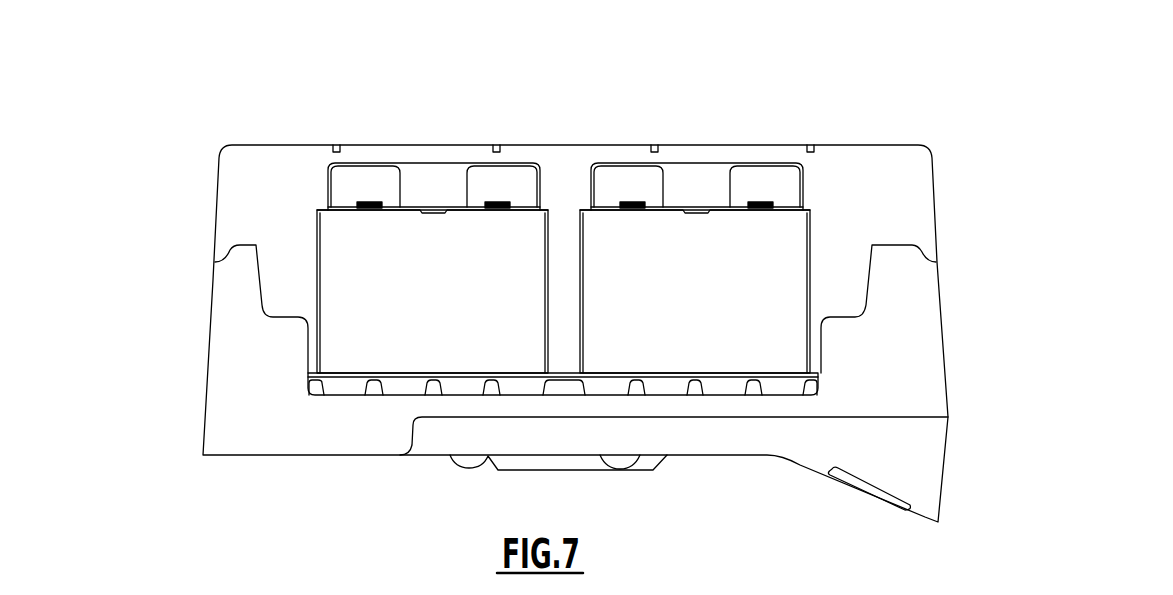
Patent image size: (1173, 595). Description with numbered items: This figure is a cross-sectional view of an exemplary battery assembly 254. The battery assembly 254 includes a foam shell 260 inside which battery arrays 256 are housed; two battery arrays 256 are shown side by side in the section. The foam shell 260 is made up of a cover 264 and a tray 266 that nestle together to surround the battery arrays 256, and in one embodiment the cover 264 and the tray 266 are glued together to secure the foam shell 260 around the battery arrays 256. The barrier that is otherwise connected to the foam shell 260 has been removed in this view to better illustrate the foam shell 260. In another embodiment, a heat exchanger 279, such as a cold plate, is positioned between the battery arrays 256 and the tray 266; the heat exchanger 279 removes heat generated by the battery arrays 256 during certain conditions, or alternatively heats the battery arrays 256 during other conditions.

The battery assembly 254 is at (748, 84).
The battery arrays 256 is at (455, 300).
The foam shell 260 is at (172, 290).
The cover 264 is at (243, 183).
The tray 266 is at (228, 382).
The heat exchanger 279 is at (507, 383).